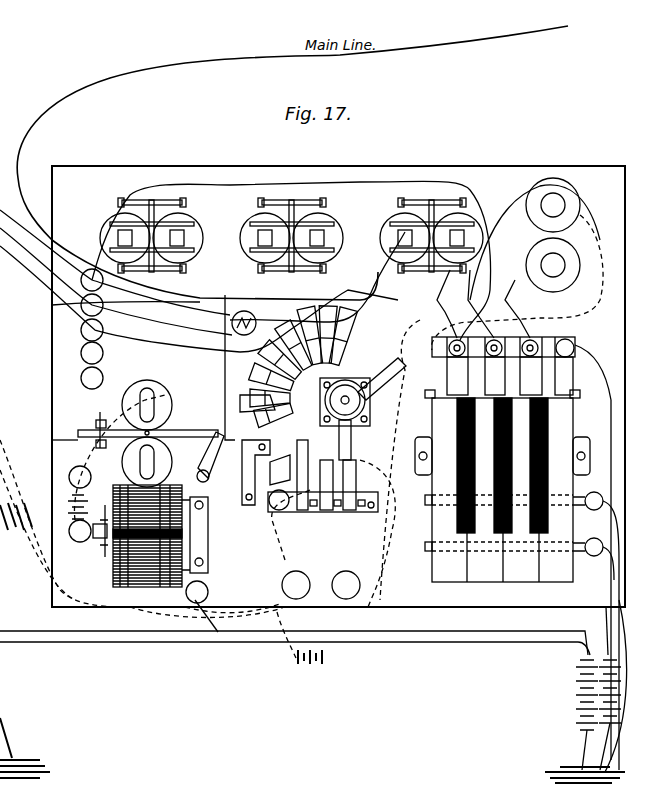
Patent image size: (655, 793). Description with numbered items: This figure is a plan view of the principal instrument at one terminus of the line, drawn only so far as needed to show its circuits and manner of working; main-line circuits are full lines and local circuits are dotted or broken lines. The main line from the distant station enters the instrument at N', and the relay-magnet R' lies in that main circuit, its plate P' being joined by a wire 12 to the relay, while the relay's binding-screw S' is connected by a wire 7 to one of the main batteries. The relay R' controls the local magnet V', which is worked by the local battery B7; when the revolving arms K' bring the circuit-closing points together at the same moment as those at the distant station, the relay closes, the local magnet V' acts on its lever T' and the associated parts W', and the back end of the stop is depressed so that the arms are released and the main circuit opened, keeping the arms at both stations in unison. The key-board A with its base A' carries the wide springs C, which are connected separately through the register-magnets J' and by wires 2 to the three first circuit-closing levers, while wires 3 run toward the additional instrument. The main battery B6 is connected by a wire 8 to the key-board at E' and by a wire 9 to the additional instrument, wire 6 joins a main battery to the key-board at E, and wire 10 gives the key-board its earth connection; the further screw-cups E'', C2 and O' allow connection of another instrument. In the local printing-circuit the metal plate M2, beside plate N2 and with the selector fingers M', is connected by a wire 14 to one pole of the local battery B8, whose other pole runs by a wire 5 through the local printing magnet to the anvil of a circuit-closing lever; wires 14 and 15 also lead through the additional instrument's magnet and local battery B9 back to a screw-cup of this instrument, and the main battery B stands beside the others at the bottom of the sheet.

The wires 2 is at (338, 284).
The wire 3 is at (89, 308).
The wire 5 is at (486, 411).
The wire 6 is at (611, 631).
The wire 7 is at (294, 636).
The wire 8 is at (586, 592).
The wire 9 is at (295, 651).
The wire 10 is at (625, 686).
The wire 12 is at (225, 501).
The wire 14 is at (291, 525).
The wire 15 is at (125, 598).
The relays J' is at (340, 235).
The binding posts O' is at (90, 329).
The main-line entry point N' is at (246, 321).
The selector contact fingers M' is at (290, 367).
The revolving arms K' is at (363, 405).
The local magnet V' is at (147, 433).
The armature lever T' is at (148, 430).
The lever W' is at (201, 457).
The relay-magnet R' is at (160, 528).
The plate P' is at (265, 472).
The binding-screw S' is at (204, 588).
The contact post N2 is at (323, 484).
The metal plate M2 is at (342, 494).
The binding posts C2 is at (321, 578).
The battery B is at (534, 522).
The main battery B6 is at (576, 715).
The local battery B7 is at (71, 503).
The local battery B8 is at (299, 647).
The local battery B9 is at (16, 508).
The wide springs C is at (503, 366).
The key board A is at (502, 486).
The key board base A' is at (557, 539).
The key-board connection point E is at (588, 493).
The key-board connection point E' is at (591, 535).
The binding post E'' is at (589, 540).